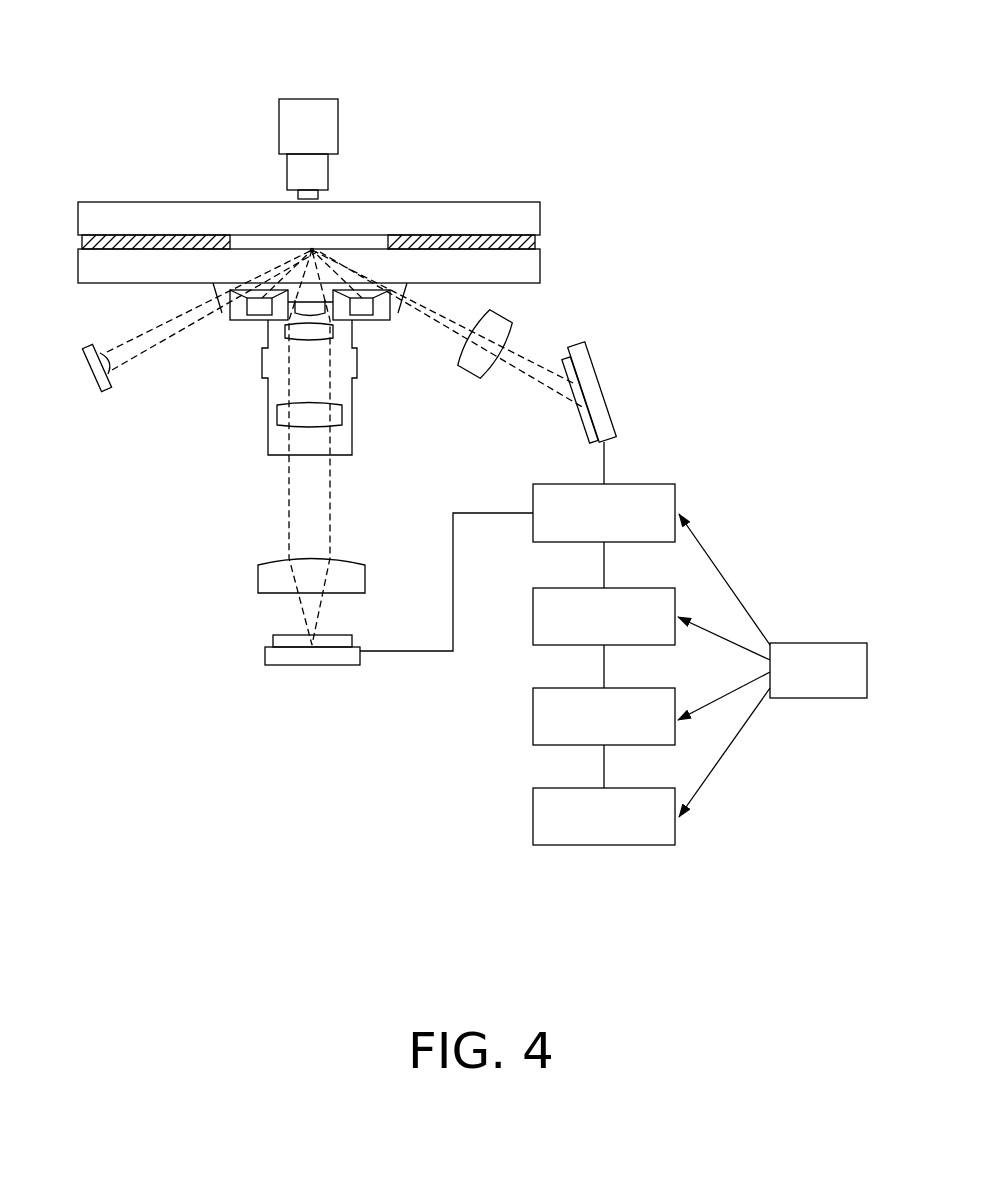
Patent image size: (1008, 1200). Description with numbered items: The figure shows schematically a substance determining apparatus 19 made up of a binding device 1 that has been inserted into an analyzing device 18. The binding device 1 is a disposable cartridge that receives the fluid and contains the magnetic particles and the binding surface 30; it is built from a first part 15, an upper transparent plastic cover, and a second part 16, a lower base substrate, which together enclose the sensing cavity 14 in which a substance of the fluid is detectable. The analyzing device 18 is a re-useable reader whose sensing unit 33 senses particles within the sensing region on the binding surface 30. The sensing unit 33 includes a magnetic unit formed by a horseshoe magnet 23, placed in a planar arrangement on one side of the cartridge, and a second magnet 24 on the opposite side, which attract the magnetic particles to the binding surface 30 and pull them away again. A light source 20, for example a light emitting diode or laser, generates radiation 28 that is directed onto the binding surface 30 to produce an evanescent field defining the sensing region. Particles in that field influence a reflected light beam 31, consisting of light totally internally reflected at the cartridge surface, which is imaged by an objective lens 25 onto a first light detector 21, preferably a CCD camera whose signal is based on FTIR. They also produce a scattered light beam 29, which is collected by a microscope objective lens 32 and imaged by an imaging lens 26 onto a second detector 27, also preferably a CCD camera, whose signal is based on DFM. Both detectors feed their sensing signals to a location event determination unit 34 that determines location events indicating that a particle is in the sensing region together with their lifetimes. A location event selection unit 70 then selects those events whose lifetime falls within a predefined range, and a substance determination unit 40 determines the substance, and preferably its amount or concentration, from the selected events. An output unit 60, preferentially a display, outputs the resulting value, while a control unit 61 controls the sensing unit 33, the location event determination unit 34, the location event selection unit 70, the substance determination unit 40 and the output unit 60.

The binding device 1 is at (489, 192).
The sensing cavity 14 is at (230, 234).
The first part 15 is at (540, 203).
The second part 16 is at (555, 283).
The analyzing device 18 is at (453, 886).
The substance determining apparatus 19 is at (533, 81).
The light source 20 is at (97, 381).
The first light detector 21 is at (592, 384).
The horseshoe magnet 23 is at (238, 313).
The second magnet 24 is at (338, 115).
The objective lens 25 is at (513, 326).
The imaging lens 26 is at (365, 572).
The second detector 27 is at (265, 652).
The radiation 28 is at (130, 361).
The scattered light beam 29 is at (331, 500).
The binding surface 30 is at (317, 246).
The reflected light beam 31 is at (441, 335).
The microscope objective lens 32 is at (352, 445).
The sensing unit 33 is at (135, 494).
The location event determination unit 34 is at (533, 524).
The substance determination unit 40 is at (533, 717).
The output unit 60 is at (533, 817).
The control unit 61 is at (815, 643).
The location event selection unit 70 is at (533, 627).